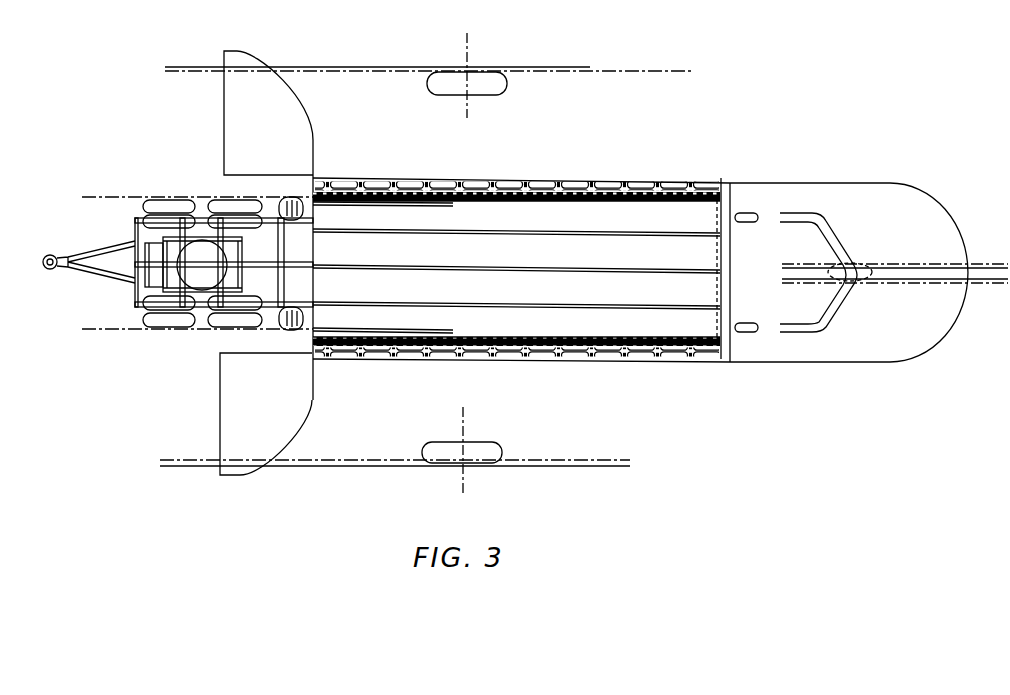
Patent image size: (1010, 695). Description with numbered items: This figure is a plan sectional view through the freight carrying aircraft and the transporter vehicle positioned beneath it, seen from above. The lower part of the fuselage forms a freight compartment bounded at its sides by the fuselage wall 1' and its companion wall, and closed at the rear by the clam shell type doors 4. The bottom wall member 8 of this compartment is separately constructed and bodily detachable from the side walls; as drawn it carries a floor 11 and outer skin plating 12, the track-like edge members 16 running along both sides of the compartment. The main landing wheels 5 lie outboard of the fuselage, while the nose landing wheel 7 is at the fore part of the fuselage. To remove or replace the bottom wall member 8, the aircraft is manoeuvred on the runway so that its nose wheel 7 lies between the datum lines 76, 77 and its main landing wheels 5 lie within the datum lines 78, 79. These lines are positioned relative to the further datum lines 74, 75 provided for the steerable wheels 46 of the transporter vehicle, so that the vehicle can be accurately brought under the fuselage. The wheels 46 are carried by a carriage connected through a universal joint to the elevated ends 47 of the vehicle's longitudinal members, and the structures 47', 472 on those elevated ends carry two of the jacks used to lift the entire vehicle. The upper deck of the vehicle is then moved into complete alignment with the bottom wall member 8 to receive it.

The outer skin plating 12 is at (516, 174).
The fuselage side wall 1' is at (516, 364).
The clam shell type doors 4 is at (297, 414).
The main landing wheels 5 is at (494, 83).
The nose landing wheel 7 is at (860, 270).
The bottom wall member 8 is at (638, 325).
The floor 11 is at (608, 218).
The track links 16 is at (665, 190).
The steerable wheels 46 is at (233, 320).
The elevated ends 47 is at (178, 267).
The jack carrying structure 472 is at (291, 197).
The jack carrying structure 47' is at (280, 343).
The datum line 74 is at (113, 194).
The datum line 75 is at (113, 332).
The datum line 76 is at (975, 265).
The datum line 77 is at (975, 284).
The datum line 78 is at (590, 73).
The datum line 79 is at (590, 461).